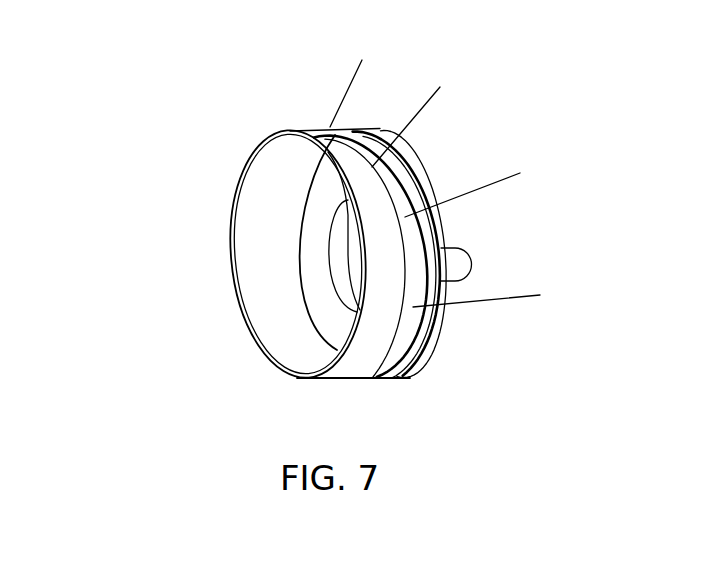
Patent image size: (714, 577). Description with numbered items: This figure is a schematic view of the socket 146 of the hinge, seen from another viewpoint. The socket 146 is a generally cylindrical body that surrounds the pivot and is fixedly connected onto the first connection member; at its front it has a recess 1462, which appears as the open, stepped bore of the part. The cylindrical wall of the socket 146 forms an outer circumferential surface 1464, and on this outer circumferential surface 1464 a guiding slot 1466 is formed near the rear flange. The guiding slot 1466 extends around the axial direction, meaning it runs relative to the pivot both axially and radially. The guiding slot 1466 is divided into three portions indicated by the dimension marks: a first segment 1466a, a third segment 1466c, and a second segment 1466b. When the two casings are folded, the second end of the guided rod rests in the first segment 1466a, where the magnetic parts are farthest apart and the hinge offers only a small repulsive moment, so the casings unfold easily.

The socket 146 is at (190, 120).
The recess 1462 is at (279, 318).
The outer circumferential surface 1464 is at (357, 370).
The guiding slot 1466 is at (400, 348).
The first segment 1466a is at (428, 98).
The second segment 1466b is at (503, 182).
The third segment 1466c is at (503, 182).